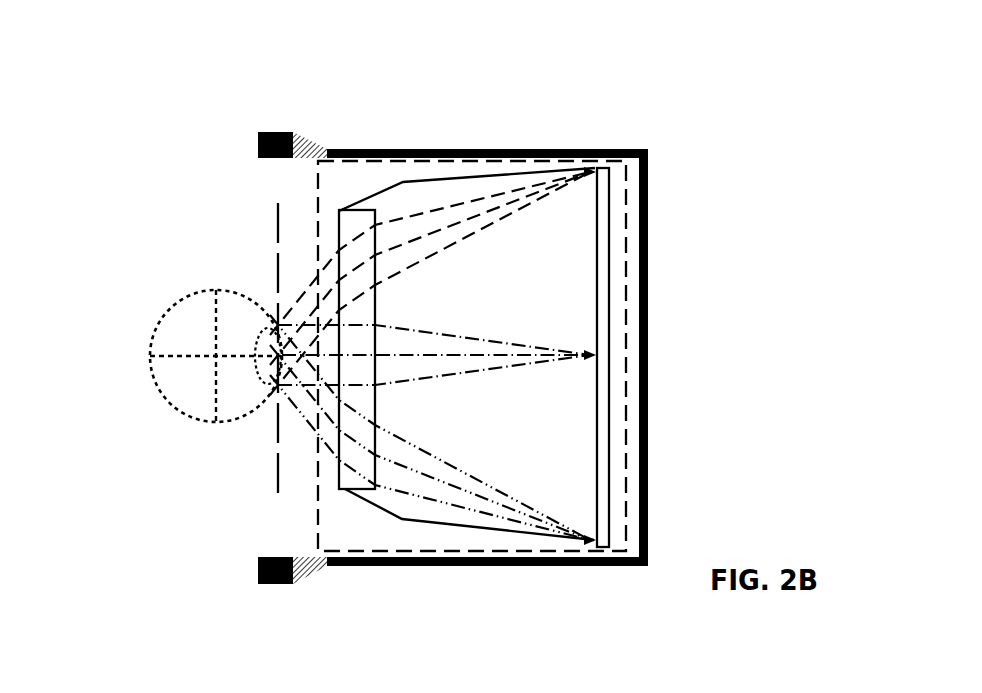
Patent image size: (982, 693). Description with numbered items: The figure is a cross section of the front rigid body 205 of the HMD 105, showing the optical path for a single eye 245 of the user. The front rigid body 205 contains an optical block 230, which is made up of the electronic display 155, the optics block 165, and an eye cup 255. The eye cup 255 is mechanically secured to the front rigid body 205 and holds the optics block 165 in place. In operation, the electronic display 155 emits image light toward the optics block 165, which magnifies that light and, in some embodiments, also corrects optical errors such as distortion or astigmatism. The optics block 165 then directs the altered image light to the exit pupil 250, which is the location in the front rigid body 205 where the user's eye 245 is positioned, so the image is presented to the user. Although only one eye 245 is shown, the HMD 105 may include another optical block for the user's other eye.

The HMD 105 is at (67, 59).
The electronic display 155 is at (609, 280).
The optics block 165 is at (339, 210).
The front rigid body 205 is at (575, 150).
The optical block 230 is at (317, 472).
The eye 245 is at (184, 299).
The exit pupil 250 is at (275, 485).
The eye cup 255 is at (403, 182).